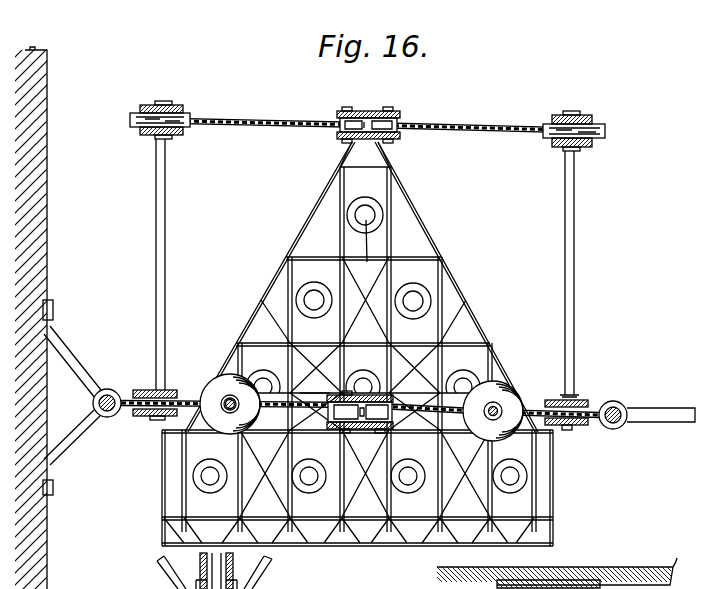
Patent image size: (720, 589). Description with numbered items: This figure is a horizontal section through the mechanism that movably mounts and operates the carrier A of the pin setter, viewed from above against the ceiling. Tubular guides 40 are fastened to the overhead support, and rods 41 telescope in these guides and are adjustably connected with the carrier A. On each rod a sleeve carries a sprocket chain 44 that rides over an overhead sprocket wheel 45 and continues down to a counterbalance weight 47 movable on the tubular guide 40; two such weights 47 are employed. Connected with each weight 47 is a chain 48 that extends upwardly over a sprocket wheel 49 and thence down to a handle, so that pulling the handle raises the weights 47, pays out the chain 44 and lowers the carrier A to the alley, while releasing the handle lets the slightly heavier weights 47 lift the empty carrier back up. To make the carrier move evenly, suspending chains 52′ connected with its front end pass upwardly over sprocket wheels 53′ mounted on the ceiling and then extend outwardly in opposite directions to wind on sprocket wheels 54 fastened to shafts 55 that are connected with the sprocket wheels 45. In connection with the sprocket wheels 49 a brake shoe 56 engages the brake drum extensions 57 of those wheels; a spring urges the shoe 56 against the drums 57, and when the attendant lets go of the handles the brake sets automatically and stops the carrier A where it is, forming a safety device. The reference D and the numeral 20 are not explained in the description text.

The ground base 20 is at (548, 580).
The tubular guide 40 is at (182, 431).
The rod 41 is at (225, 412).
The sprocket chain 44 is at (129, 411).
The overhead sprocket wheel 45 is at (593, 406).
The counterbalance weight 47 is at (213, 383).
The chain 48 is at (440, 390).
The sprocket wheel 49 is at (323, 392).
The suspending chain 52′ is at (278, 124).
The sprocket wheel 53′ is at (403, 121).
The sprocket wheel 54 is at (142, 132).
The shaft 55 is at (165, 275).
The brake shoe 56 is at (400, 432).
The brake drum extension 57 is at (344, 430).
The carrier A is at (302, 236).
The brace D is at (338, 285).